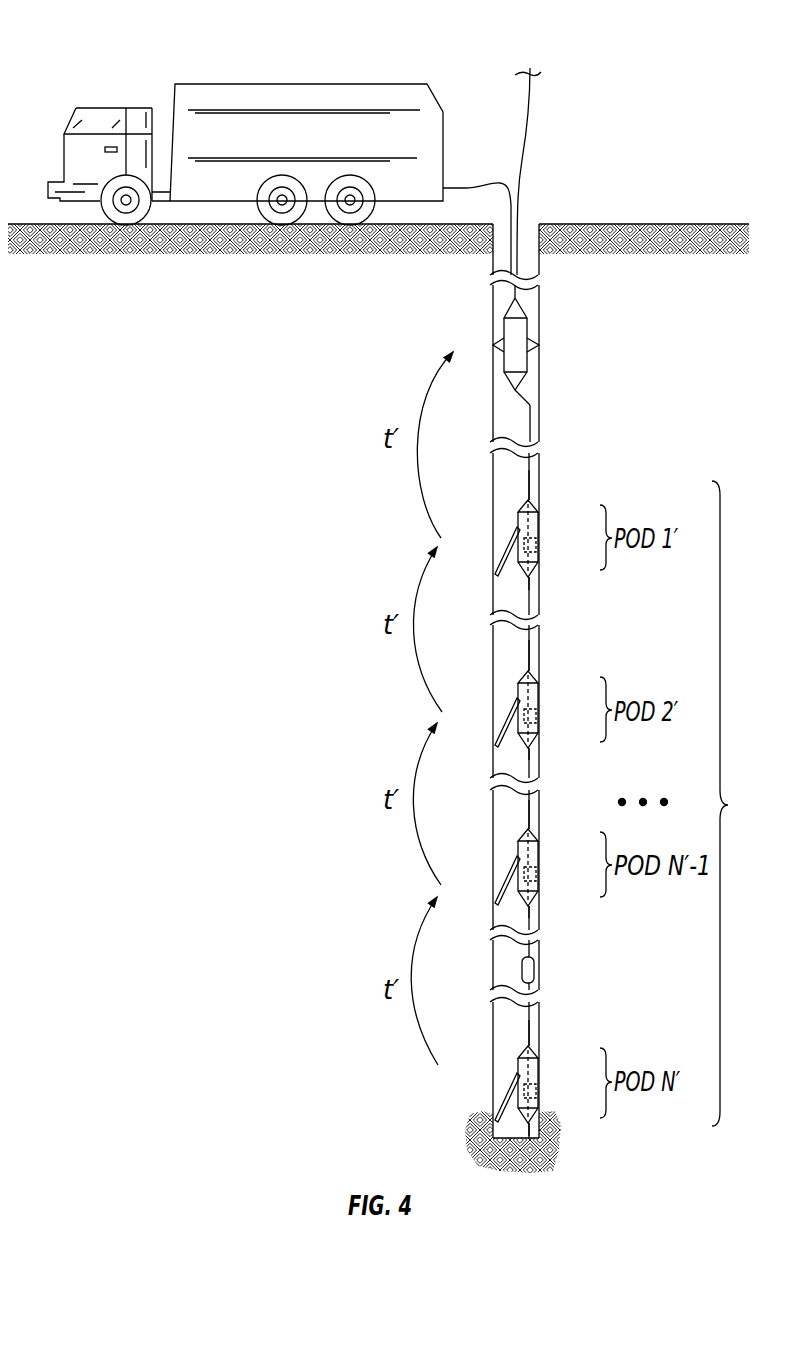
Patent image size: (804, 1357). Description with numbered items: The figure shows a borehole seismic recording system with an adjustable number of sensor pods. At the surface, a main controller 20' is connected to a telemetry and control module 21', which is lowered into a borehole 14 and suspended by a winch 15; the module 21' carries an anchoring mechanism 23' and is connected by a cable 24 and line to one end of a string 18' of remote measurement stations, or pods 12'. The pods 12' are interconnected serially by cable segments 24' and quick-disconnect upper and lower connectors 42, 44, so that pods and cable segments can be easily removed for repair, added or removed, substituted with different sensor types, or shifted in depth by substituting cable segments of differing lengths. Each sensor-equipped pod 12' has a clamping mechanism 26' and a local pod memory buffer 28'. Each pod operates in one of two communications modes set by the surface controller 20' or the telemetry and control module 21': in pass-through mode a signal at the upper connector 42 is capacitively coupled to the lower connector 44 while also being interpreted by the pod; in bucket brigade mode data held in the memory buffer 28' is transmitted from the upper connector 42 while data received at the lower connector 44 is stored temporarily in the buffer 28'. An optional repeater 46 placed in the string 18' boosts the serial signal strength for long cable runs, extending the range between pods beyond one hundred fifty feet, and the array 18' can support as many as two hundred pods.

The surface-based main controller 20' is at (245, 139).
The hose / cable 24 is at (477, 211).
The winch 15 is at (529, 78).
The telemetry and control module 21' is at (549, 345).
The anchoring mechanism 23' is at (544, 332).
The cable segments 24' is at (562, 674).
The remote measurement station (pod) 12' is at (555, 799).
The local pod memory buffer 28' is at (560, 806).
The clamping mechanism 26' is at (482, 821).
The upper connector 42 is at (531, 502).
The lower connector 44 is at (530, 578).
The repeater 46 is at (536, 970).
The borehole 14 is at (546, 1143).
The string (array) of pods 18' is at (743, 803).